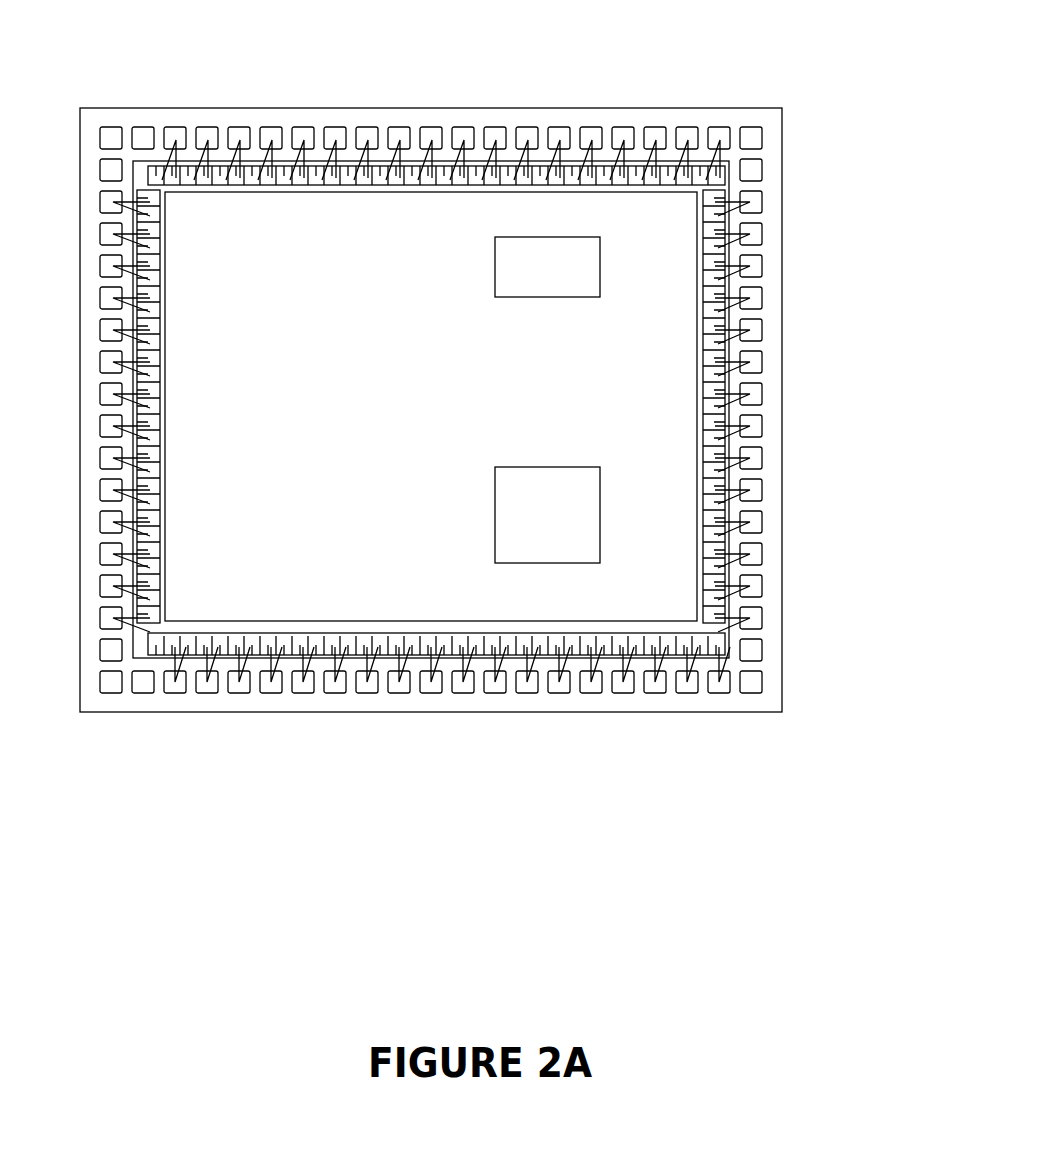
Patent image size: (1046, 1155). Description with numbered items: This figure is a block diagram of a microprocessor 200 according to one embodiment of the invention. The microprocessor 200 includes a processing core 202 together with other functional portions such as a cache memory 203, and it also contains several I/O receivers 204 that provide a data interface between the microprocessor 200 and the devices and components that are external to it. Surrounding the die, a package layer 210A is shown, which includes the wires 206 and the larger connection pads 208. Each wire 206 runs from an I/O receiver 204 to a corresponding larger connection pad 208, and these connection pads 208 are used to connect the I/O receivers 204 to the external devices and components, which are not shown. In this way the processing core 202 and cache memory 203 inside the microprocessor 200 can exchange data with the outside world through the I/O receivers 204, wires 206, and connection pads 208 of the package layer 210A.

The microprocessor 200 is at (530, 56).
The processing core 202 is at (494, 512).
The cache memory 203 is at (494, 282).
The I/O receiver 204 is at (707, 393).
The wire 206 is at (738, 378).
The connection pad 208 is at (762, 393).
The package substrate 210A is at (761, 742).